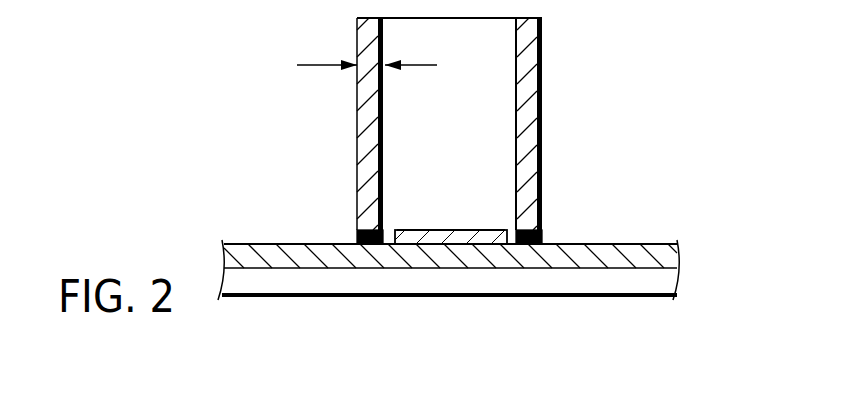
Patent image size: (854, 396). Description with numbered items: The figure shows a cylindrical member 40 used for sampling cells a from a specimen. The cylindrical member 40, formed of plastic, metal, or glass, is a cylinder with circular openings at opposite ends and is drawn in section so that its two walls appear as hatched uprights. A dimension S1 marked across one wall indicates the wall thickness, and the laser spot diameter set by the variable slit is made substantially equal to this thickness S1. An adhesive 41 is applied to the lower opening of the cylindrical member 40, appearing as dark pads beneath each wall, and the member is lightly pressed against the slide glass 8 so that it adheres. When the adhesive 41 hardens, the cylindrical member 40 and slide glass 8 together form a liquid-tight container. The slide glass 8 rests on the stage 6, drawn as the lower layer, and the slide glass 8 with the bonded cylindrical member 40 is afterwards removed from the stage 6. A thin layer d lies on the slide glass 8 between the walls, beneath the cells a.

The cylindrical member 40 is at (531, 57).
The adhesive 41 is at (548, 233).
The slide glass 8 is at (622, 244).
The stage 6 is at (595, 288).
The electrode layer d is at (409, 238).
The cells a is at (450, 231).
The wall thickness of the cylindrical member S1 is at (367, 54).